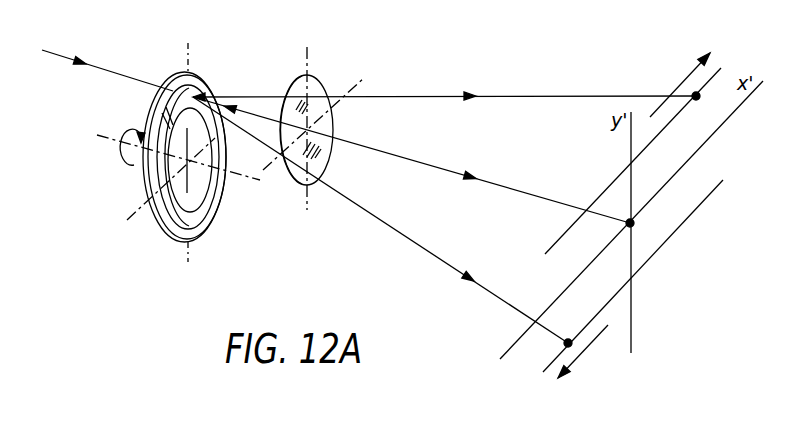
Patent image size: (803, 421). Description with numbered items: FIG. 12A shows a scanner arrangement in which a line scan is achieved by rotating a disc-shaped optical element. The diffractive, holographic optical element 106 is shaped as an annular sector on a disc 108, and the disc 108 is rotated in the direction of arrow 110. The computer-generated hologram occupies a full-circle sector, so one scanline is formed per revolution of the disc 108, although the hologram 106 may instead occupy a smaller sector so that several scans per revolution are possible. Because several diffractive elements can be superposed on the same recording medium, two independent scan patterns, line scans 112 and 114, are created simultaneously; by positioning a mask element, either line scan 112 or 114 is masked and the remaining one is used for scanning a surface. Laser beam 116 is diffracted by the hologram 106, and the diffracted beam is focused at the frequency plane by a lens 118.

The diffractive optical element 106 is at (160, 174).
The disc 108 is at (173, 242).
The arrow 110 is at (114, 153).
The line scan 112 is at (558, 240).
The line scan 114 is at (698, 212).
The laser beam 116 is at (127, 75).
The lens 118 is at (333, 120).